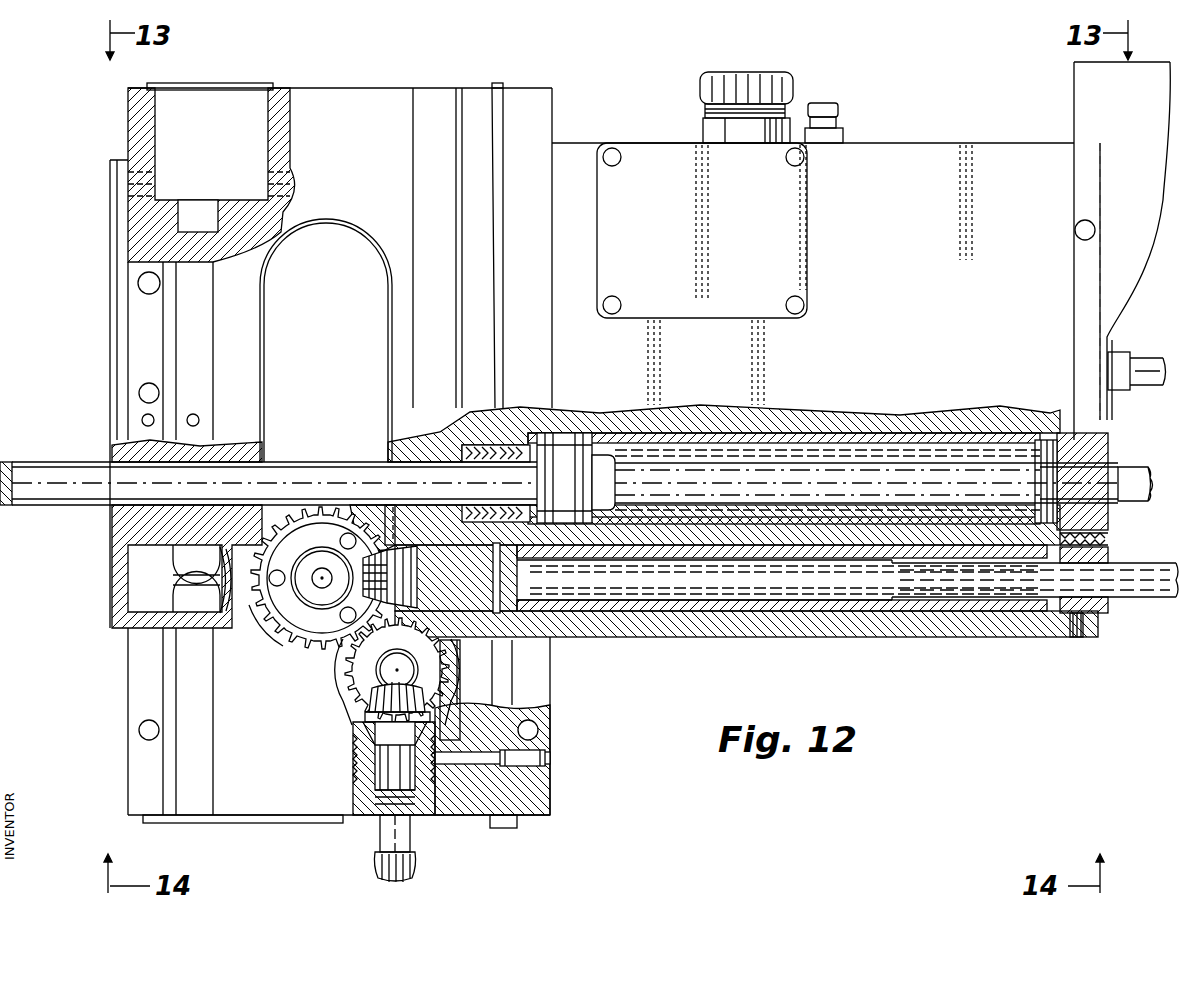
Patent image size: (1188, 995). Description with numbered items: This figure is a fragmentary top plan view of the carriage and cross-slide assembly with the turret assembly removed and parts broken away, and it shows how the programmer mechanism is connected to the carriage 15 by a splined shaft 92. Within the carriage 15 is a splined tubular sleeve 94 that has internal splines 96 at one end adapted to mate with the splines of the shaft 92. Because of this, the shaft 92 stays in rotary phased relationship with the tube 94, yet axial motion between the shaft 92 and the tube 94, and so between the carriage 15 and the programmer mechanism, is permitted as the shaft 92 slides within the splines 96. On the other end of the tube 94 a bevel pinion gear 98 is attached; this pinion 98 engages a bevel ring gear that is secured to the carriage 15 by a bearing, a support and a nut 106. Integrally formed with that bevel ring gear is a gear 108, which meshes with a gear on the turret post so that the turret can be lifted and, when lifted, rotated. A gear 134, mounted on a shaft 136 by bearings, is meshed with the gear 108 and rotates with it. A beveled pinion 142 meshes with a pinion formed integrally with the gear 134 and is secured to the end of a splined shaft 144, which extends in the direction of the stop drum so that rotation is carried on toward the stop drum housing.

The carriage 15 is at (930, 167).
The splined shaft 92 is at (1130, 596).
The splined tubular sleeve 94 is at (713, 603).
The internal splines 96 is at (1093, 572).
The bevel pinion gear 98 is at (394, 558).
The nut 106 is at (303, 591).
The gear 108 is at (290, 642).
The gear 134 is at (473, 665).
The shaft 136 is at (377, 673).
The beveled pinion 142 is at (371, 702).
The splined shaft 144 is at (413, 868).